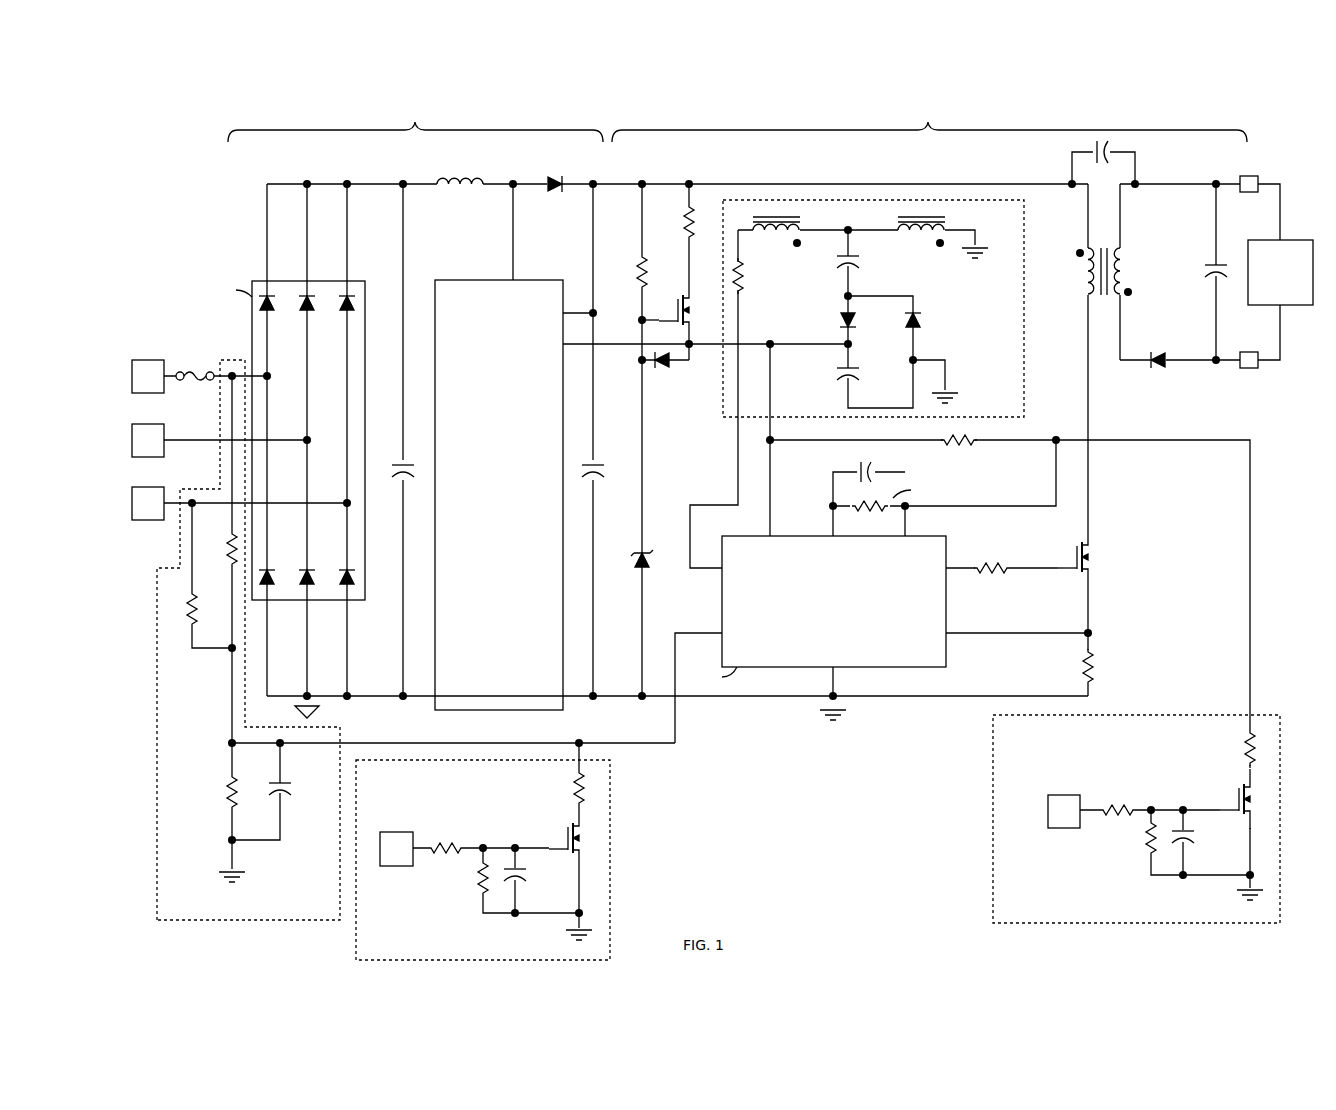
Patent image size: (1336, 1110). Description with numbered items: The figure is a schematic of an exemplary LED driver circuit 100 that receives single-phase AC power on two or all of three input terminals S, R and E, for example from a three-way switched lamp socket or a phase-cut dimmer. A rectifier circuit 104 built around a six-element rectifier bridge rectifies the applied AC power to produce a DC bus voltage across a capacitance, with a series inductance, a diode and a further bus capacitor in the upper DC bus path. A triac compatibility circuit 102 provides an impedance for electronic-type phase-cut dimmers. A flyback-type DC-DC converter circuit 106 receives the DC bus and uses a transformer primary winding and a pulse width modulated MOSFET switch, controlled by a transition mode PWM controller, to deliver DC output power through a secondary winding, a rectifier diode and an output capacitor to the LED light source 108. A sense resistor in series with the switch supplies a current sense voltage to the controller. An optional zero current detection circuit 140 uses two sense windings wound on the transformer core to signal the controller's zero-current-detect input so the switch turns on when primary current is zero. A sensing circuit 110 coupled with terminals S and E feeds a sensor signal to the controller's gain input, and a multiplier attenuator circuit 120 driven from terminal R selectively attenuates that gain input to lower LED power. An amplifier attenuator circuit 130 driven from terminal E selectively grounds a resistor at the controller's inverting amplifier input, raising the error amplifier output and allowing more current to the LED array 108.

The LED driver circuit 100 is at (190, 143).
The triac compatibility circuit 102 is at (510, 276).
The rectifier circuit 104 is at (415, 122).
The DC-DC converter circuit 106 is at (928, 122).
The LED light source 108 is at (1266, 240).
The sensing circuit 110 is at (178, 920).
The multiplier attenuator circuit 120 is at (355, 945).
The amplifier attenuator circuit 130 is at (993, 901).
The zero current detection circuit 140 is at (1028, 313).